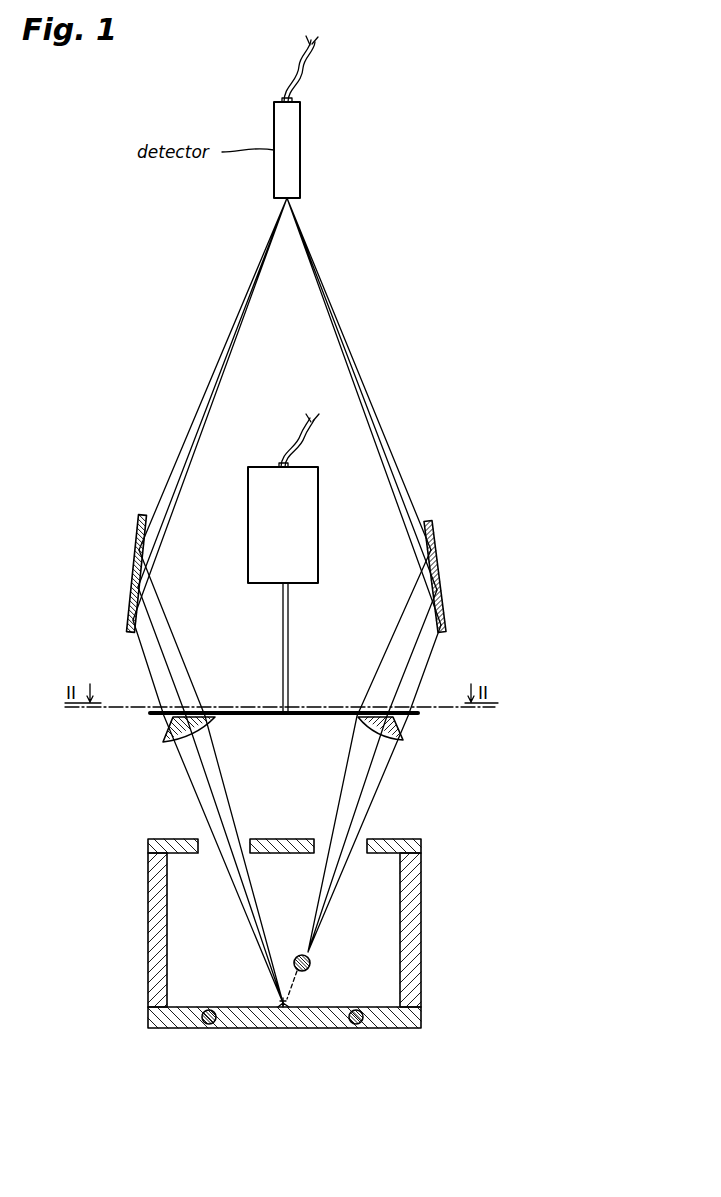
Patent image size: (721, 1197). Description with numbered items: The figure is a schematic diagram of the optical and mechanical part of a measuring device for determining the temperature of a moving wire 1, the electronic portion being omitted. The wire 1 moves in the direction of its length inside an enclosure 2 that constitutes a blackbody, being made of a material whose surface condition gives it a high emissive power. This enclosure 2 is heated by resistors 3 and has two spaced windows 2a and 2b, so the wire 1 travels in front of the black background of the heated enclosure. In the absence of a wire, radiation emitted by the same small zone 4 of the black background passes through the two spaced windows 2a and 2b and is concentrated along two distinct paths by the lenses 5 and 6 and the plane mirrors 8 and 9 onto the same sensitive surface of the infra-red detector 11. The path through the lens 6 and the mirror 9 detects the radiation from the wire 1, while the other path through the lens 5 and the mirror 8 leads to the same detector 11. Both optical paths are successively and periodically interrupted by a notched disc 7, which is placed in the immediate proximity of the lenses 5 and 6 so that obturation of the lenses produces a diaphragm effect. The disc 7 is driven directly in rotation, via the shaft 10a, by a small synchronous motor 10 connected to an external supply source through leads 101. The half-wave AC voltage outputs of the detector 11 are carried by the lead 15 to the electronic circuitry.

The wire 1 is at (309, 957).
The enclosure 2 is at (421, 980).
The window 2a is at (365, 845).
The window 2b is at (200, 838).
The resistors 3 is at (209, 1024).
The small zone of black background 4 is at (282, 1000).
The lens 5 is at (165, 740).
The lens 6 is at (403, 738).
The notched disc 7 is at (325, 709).
The plane mirror 8 is at (136, 556).
The plane mirror 9 is at (432, 548).
The synchronous motor 10 is at (318, 555).
The shaft 10a is at (283, 675).
The infra-red detector 11 is at (293, 153).
The lead 15 is at (318, 47).
The leads 101 is at (306, 421).